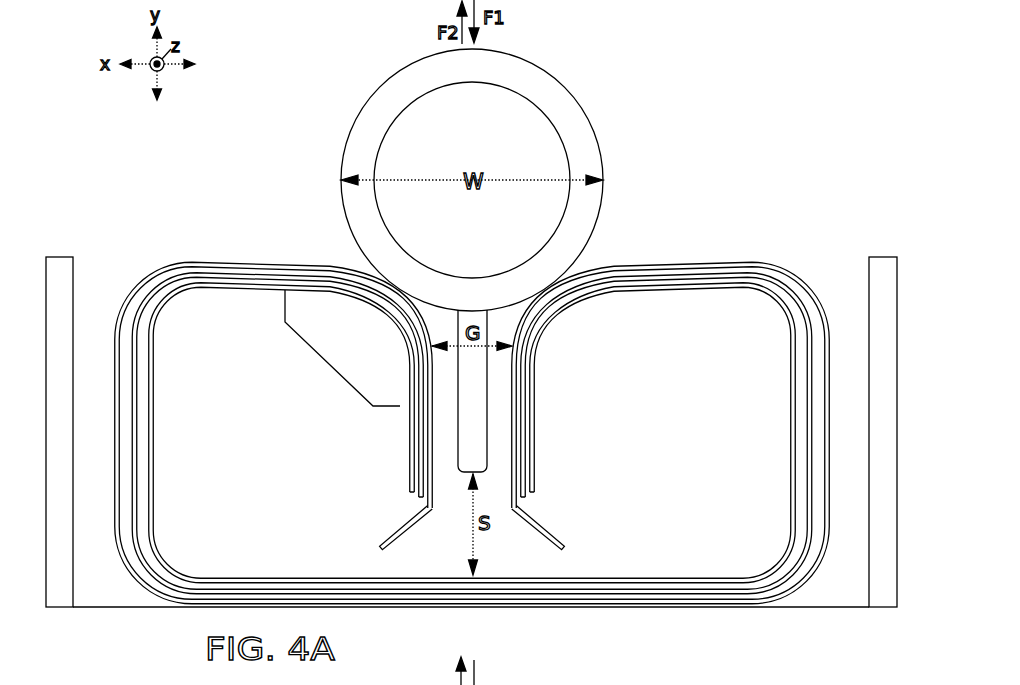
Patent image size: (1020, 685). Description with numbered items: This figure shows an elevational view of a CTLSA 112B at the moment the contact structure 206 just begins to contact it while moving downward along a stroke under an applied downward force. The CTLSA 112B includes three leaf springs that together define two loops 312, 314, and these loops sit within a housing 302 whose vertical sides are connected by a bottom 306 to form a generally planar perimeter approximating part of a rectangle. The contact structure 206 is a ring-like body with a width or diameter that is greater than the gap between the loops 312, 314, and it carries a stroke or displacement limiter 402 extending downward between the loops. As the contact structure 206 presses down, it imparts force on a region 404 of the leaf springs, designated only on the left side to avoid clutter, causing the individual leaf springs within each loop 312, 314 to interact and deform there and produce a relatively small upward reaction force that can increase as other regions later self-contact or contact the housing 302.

The contact structure 206 is at (572, 96).
The CTLSA 112B is at (472, 326).
The bottom 306 is at (820, 609).
The housing 302 is at (470, 413).
The stroke or displacement limiter 402 is at (462, 475).
The region 404 is at (340, 377).
The loop 312 is at (293, 433).
The loop 314 is at (650, 433).